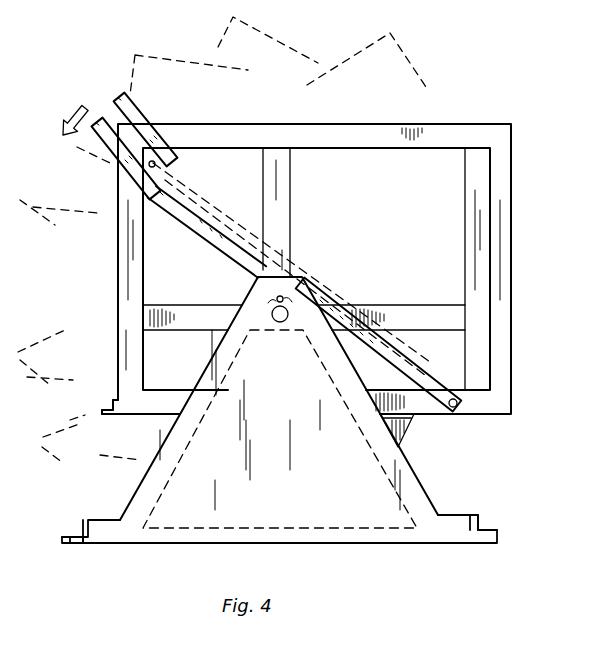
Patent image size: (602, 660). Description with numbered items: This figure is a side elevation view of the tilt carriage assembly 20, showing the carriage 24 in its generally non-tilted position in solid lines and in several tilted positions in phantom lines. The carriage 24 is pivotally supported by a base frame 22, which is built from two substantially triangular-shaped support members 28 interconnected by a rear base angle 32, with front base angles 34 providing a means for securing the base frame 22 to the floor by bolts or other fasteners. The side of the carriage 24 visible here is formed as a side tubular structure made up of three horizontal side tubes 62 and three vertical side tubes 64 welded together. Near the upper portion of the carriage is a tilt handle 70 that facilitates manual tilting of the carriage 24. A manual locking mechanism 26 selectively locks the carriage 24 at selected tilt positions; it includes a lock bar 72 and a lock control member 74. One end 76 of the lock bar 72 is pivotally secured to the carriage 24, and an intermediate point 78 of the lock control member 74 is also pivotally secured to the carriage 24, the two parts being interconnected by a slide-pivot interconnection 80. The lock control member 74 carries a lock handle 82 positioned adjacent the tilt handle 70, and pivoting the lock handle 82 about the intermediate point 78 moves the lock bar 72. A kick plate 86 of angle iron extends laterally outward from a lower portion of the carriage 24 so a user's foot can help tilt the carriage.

The tilt carriage assembly 20 is at (544, 114).
The base frame 22 is at (360, 545).
The carriage 24 is at (513, 174).
The manual locking mechanism 26 is at (325, 267).
The support member 28 is at (405, 474).
The rear base angle 32 is at (68, 548).
The front base angle 34 is at (488, 529).
The horizontal side tube 62 is at (445, 130).
The vertical side tube 64 is at (138, 275).
The tilt handle 70 is at (125, 95).
The lock bar 72 is at (425, 373).
The lock control member 74 is at (147, 193).
The end of lock bar 76 is at (457, 407).
The intermediate point 78 is at (150, 163).
The slide-pivot interconnection 80 is at (165, 201).
The lock handle 82 is at (97, 120).
The kick plate 86 is at (102, 412).